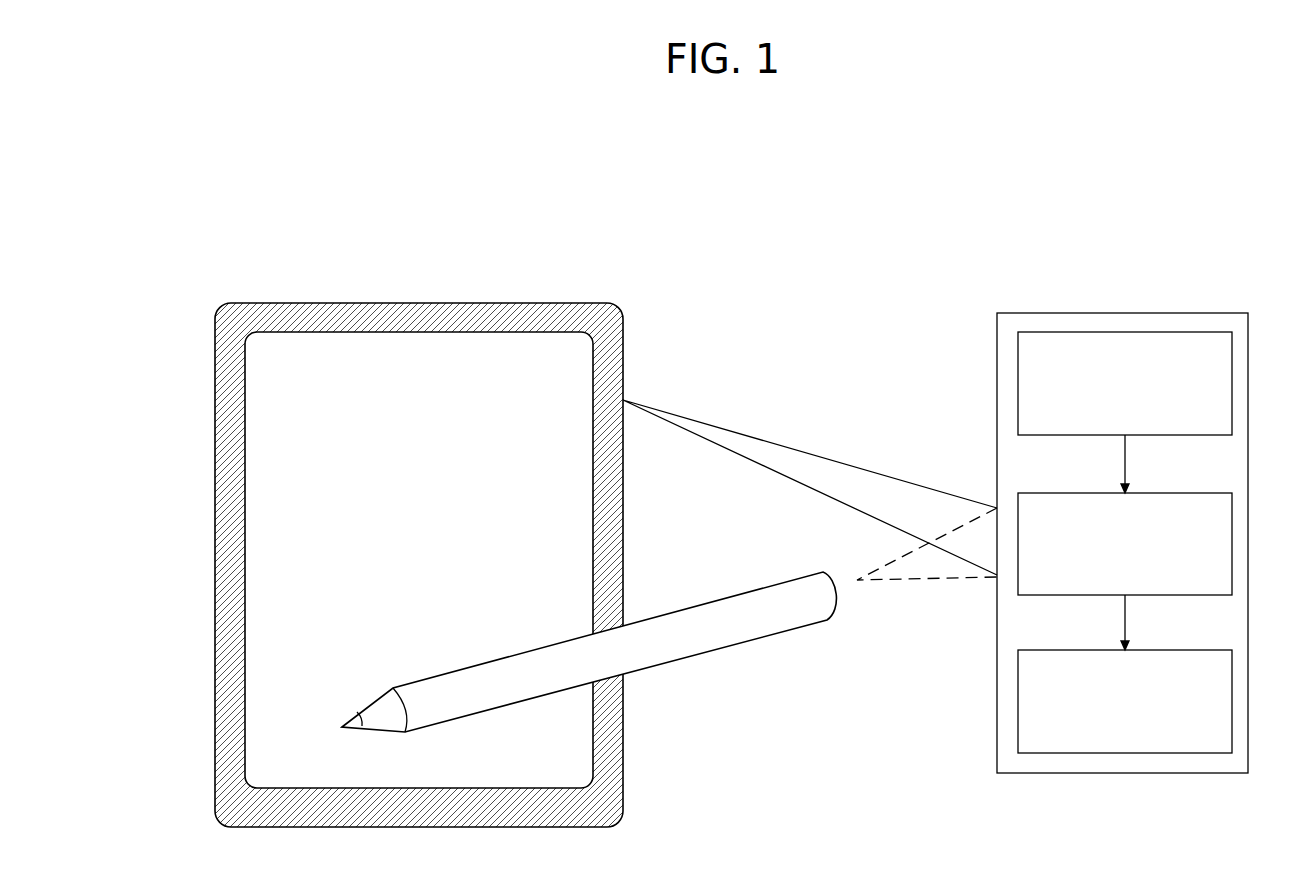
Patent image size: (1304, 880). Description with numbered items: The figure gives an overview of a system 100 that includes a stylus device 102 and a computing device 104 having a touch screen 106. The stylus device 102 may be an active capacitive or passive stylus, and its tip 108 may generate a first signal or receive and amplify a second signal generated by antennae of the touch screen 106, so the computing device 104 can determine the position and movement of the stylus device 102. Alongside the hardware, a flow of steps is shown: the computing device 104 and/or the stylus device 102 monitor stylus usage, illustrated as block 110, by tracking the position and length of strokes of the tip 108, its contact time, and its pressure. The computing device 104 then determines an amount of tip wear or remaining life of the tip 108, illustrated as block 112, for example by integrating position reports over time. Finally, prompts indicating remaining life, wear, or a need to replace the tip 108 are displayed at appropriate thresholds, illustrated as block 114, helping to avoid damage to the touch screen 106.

The system 100 is at (264, 211).
The stylus device 102 is at (788, 633).
The computing device 104 is at (217, 395).
The touch screen 106 is at (258, 472).
The tip 108 is at (343, 724).
The monitor stylus usage block 110 is at (1233, 362).
The determine amount of tip wear or remaining life block 112 is at (1233, 530).
The prompt user block 114 is at (1233, 677).